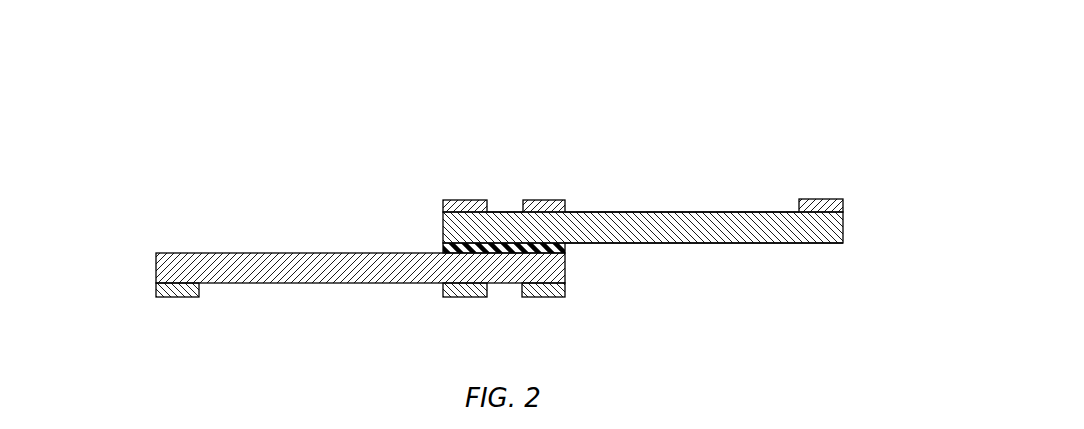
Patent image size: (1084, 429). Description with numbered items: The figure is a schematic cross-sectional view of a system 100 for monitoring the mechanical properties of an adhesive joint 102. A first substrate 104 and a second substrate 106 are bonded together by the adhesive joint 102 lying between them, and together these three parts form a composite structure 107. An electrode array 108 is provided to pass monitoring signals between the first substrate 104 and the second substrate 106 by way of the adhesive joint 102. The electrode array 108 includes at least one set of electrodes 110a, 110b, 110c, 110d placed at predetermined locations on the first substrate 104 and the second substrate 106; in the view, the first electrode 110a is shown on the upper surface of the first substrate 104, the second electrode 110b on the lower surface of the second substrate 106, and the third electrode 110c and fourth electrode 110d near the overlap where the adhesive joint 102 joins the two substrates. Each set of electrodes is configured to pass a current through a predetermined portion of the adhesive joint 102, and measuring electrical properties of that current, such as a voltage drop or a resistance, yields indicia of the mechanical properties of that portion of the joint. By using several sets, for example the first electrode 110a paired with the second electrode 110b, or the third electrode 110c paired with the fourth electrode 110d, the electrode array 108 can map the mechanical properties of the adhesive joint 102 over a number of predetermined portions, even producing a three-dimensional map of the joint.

The system 100 is at (443, 183).
The adhesive joint 102 is at (449, 225).
The first substrate 104 is at (702, 209).
The second substrate 106 is at (304, 252).
The composite structure 107 is at (704, 291).
The electrode array 108 is at (643, 141).
The first electrode 110a is at (784, 163).
The second electrode 110b is at (169, 347).
The third electrode 110c is at (548, 340).
The fourth electrode 110d is at (464, 162).